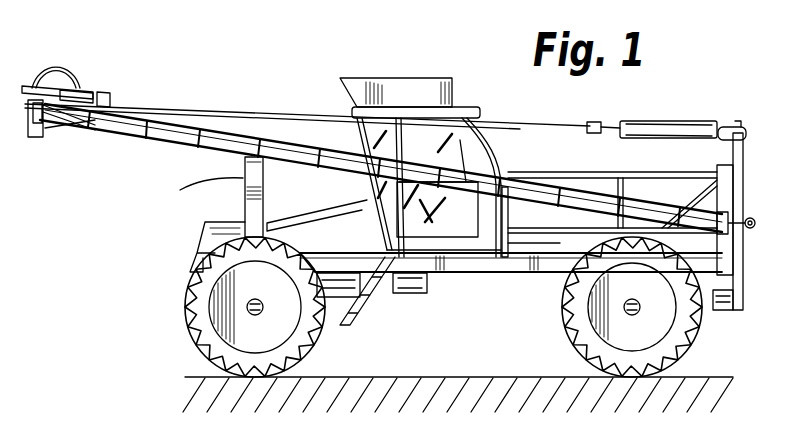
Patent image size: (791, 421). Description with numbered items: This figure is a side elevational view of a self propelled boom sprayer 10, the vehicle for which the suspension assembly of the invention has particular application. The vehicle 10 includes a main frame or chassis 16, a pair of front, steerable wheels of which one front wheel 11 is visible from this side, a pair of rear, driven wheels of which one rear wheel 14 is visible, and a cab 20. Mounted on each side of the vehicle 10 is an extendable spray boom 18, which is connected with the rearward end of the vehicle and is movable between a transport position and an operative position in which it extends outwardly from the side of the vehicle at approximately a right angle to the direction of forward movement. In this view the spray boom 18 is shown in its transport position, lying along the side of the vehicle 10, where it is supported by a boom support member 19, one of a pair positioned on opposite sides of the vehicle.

The self propelled boom sprayer 10 is at (626, 101).
The front steerable wheel 11 is at (193, 326).
The rear driven wheel 14 is at (700, 338).
The main frame or chassis 16 is at (472, 272).
The extendable spray boom 18 is at (218, 133).
The boom support member 19 is at (248, 182).
The cab 20 is at (478, 110).